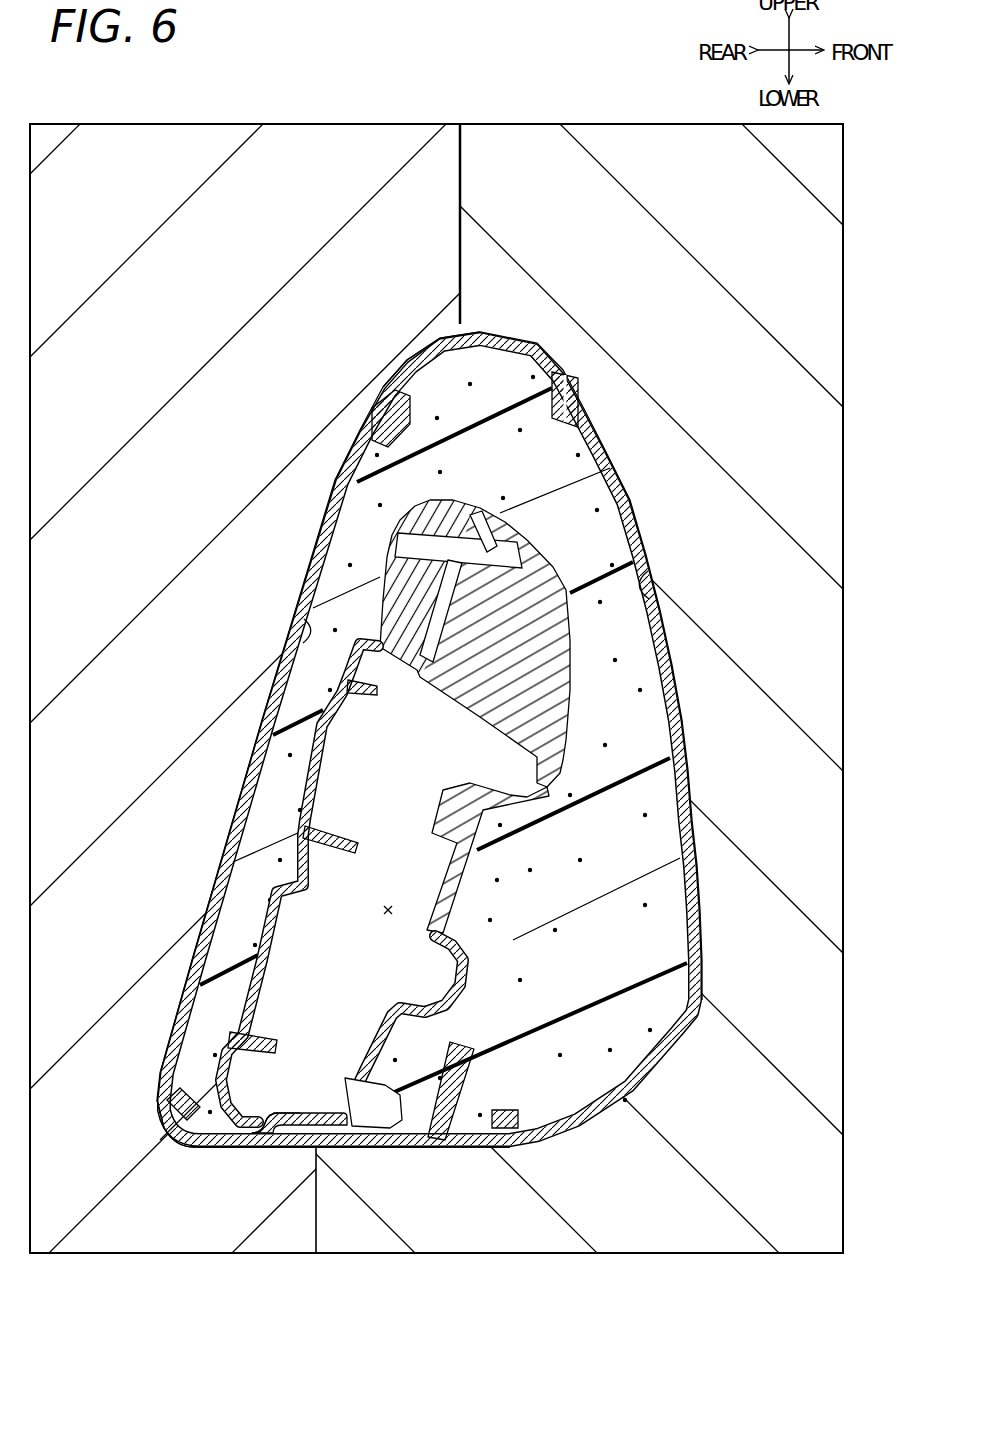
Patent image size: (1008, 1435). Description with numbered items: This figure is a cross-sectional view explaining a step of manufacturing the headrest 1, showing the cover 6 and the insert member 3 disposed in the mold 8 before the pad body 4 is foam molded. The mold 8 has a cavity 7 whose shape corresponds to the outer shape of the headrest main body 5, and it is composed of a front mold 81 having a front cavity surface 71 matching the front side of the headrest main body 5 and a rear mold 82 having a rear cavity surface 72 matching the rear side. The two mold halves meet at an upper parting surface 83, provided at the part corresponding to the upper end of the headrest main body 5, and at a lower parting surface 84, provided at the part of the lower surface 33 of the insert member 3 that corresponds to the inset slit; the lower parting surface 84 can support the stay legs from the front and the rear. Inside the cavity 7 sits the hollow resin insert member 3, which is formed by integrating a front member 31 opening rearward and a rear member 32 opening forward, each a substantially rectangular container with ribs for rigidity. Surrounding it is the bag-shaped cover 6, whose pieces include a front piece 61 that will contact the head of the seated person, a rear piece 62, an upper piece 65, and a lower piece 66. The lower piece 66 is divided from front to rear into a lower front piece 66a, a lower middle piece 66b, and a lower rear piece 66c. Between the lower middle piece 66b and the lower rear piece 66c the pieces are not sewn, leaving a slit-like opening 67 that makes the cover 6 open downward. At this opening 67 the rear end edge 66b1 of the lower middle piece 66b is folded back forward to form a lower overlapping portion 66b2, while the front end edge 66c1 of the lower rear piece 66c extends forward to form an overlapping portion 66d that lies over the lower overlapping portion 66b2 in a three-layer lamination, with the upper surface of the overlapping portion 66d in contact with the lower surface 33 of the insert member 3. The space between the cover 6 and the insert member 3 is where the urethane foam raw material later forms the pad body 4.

The headrest 1 is at (527, 303).
The insert member 3 is at (445, 890).
The pad body 4 is at (660, 827).
The headrest main body 5 is at (426, 345).
The cover 6 is at (683, 737).
The cavity 7 is at (395, 910).
The mold 8 is at (313, 42).
The front member 31 is at (640, 570).
The rear member 32 is at (297, 788).
The lower surface 33 is at (299, 1147).
The front piece 61 is at (647, 523).
The rear piece 62 is at (302, 580).
The upper piece 65 is at (447, 331).
The lower piece 66 is at (472, 1297).
The lower front piece 66a is at (464, 1149).
The lower middle piece 66b is at (358, 1150).
The rear end edge 66b1 is at (380, 1148).
The lower overlapping portion 66b2 is at (288, 1148).
The lower rear piece 66c is at (228, 1148).
The front end edge 66c1 is at (340, 1113).
The overlapping portion 66d is at (283, 1117).
The opening 67 is at (262, 1150).
The front cavity surface 71 is at (648, 583).
The rear cavity surface 72 is at (297, 633).
The front mold 81 is at (645, 152).
The rear mold 82 is at (300, 152).
The upper parting surface 83 is at (461, 170).
The lower parting surface 84 is at (317, 1190).